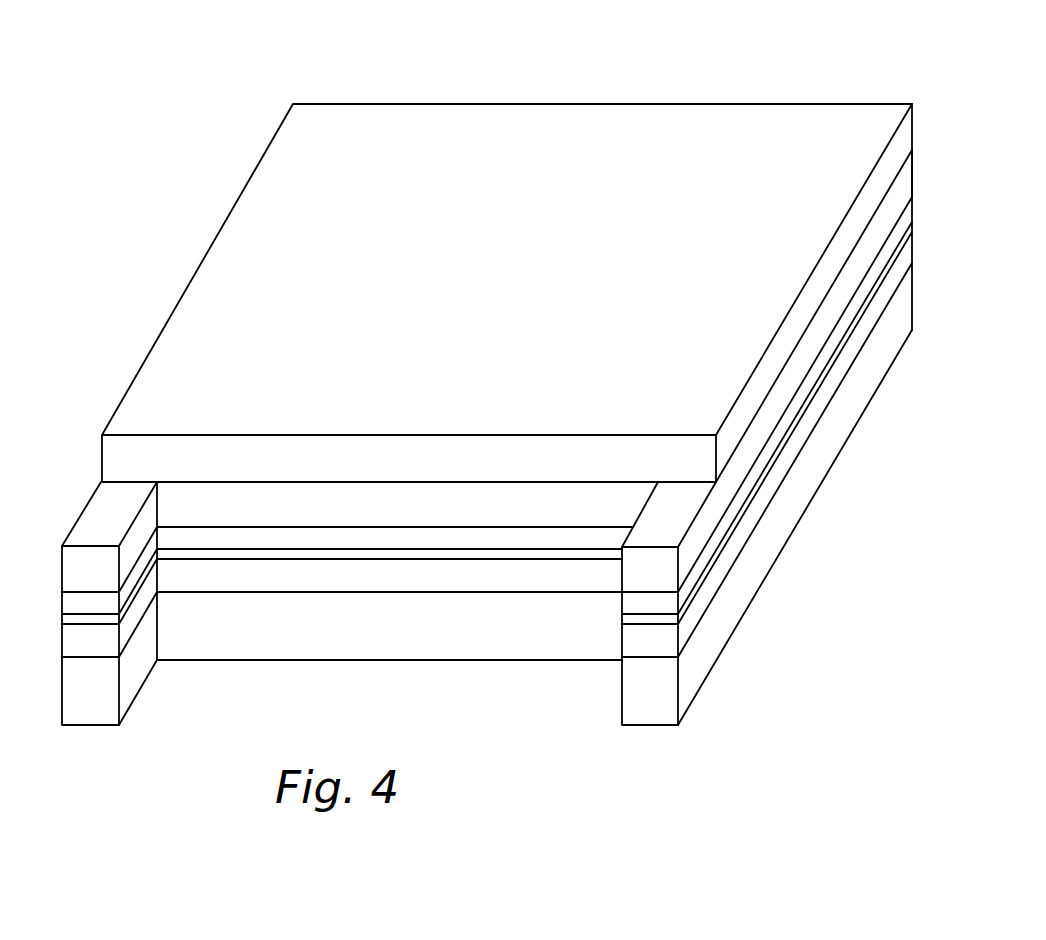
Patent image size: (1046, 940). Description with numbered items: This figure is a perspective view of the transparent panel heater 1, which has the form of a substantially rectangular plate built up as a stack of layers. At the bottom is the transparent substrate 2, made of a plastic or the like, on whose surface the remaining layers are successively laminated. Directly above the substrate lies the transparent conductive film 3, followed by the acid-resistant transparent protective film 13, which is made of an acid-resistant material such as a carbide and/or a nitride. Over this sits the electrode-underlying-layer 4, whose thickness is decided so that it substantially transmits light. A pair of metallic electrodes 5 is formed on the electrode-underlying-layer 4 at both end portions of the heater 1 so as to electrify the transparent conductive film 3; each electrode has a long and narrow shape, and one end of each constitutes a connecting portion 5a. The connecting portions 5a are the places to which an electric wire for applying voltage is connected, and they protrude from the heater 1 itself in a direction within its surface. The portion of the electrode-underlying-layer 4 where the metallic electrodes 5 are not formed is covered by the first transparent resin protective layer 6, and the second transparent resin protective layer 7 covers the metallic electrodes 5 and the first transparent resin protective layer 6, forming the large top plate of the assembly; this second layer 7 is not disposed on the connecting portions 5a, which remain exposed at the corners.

The transparent panel heater 1 is at (253, 153).
The second transparent resin protective layer 7 is at (913, 122).
The first transparent resin protective layer 6 is at (235, 503).
The connecting portion 5a is at (95, 527).
The metallic electrode 5 is at (810, 348).
The electrode-underlying-layer 4 is at (802, 392).
The acid-resistant transparent protective film 13 is at (790, 435).
The transparent conductive film 3 is at (753, 513).
The transparent substrate 2 is at (752, 555).